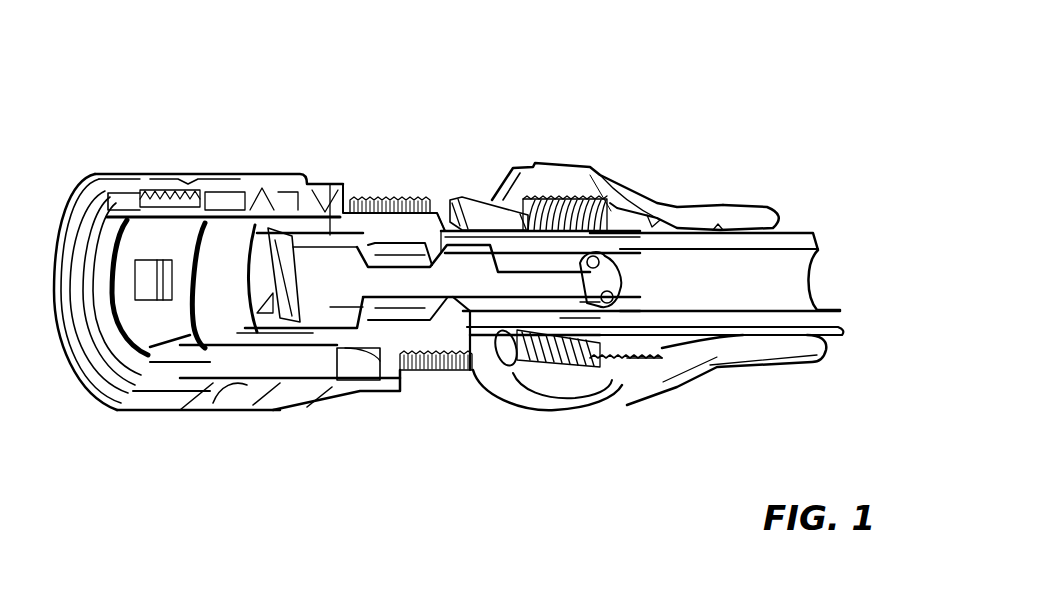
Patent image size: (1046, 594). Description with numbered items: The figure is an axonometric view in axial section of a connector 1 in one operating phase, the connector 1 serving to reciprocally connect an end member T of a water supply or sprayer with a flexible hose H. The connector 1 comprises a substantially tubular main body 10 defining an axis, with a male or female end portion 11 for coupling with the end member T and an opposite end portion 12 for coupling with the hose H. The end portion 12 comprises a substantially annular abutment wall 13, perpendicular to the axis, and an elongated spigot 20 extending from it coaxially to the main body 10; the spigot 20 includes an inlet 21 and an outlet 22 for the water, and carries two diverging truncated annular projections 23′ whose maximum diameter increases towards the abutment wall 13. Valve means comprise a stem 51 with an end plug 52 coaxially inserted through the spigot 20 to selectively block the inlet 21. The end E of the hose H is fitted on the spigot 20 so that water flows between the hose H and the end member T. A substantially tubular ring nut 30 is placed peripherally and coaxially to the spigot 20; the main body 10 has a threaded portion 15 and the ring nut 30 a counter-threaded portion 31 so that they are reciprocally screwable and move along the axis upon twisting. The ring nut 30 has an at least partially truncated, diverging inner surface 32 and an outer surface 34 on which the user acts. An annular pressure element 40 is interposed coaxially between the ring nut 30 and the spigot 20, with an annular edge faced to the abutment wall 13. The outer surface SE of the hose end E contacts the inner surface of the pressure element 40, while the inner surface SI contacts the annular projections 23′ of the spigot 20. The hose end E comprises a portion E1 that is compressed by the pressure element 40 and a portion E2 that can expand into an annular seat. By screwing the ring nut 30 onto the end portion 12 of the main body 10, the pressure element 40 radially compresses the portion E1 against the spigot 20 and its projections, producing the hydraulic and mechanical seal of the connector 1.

The connector 1 is at (46, 56).
The end member T is at (140, 173).
The end portion 11 is at (237, 202).
The main body 10 is at (339, 152).
The threaded portion 15 is at (385, 200).
The abutment wall 13 is at (433, 210).
The annular pressure element 40 is at (487, 240).
The portion of the hose end E2 is at (455, 205).
The end portion 12 is at (481, 231).
The portion of the hose end E1 is at (505, 223).
The counter-threaded portion 31 is at (553, 200).
The inlet 21 is at (565, 255).
The ring nut 30 is at (603, 173).
The end of the flexible hose E is at (605, 215).
The inner surface 32 is at (660, 210).
The outer surface 34 is at (730, 204).
The hose H is at (827, 239).
The outlet 22 is at (463, 300).
The spigot 20 is at (497, 310).
The outer surface of the hose end SE is at (567, 303).
The inner surface of the hose end SI is at (602, 293).
The annular projection 23′ is at (633, 300).
The stem 51 is at (606, 282).
The end plug 52 is at (620, 290).